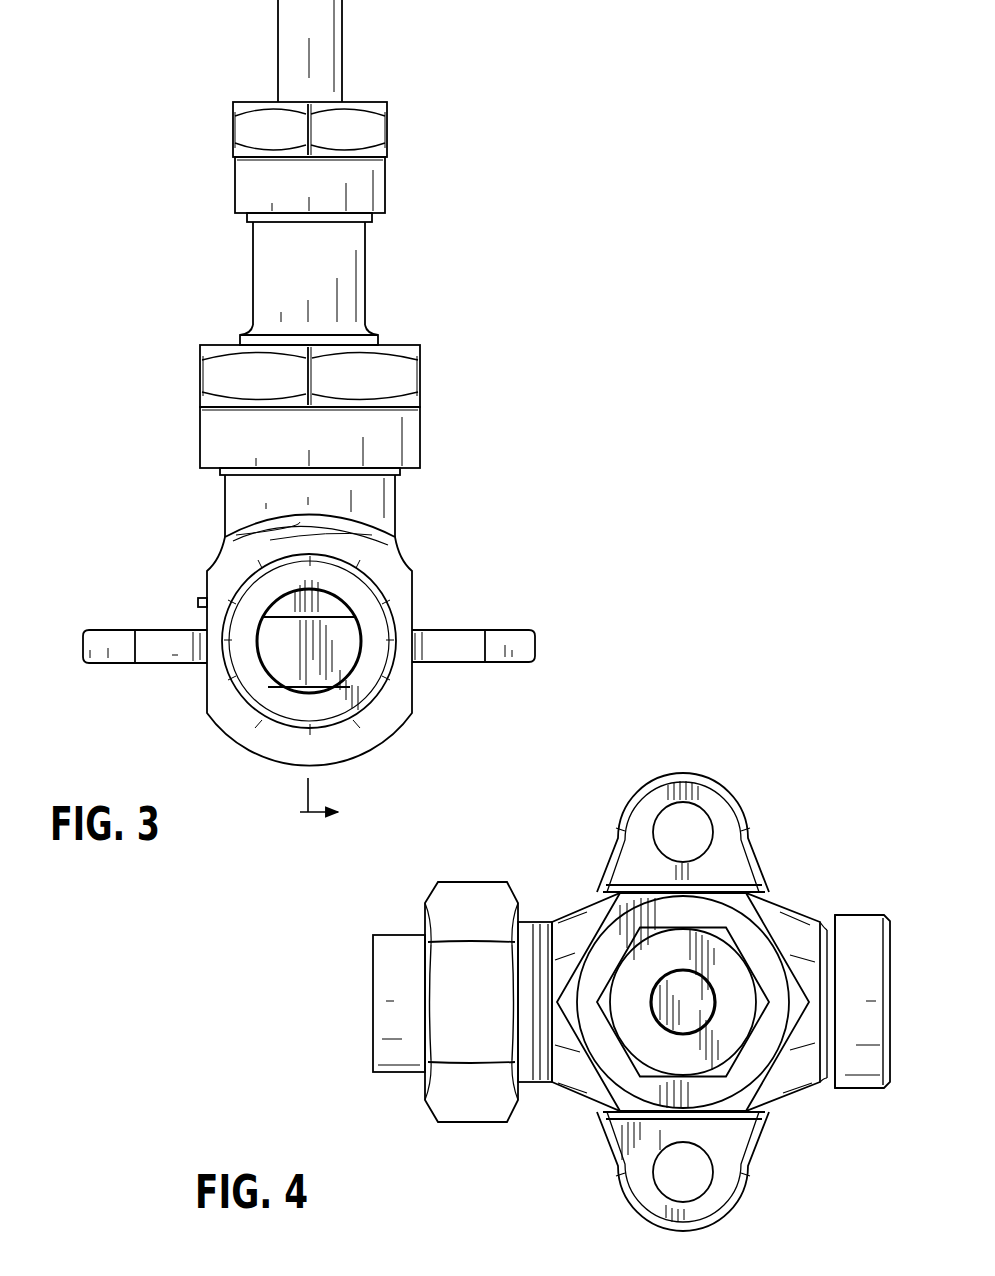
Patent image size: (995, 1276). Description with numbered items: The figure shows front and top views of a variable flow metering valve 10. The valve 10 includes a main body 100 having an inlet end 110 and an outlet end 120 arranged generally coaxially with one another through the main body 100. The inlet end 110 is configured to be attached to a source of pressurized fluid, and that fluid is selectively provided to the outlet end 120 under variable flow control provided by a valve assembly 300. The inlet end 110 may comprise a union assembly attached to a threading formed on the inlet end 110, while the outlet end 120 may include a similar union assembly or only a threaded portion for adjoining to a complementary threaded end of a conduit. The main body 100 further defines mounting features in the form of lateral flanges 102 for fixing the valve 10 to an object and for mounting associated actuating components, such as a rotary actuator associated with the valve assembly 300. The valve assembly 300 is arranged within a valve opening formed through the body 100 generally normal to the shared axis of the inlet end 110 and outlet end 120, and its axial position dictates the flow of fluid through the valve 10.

In FIG. 3, the variable flow metering valve 10 is at (434, 118).
In FIG. 4, the variable flow metering valve 10 is at (792, 794).
In FIG. 3, the valve assembly 300 is at (378, 321).
In FIG. 3, the main body 100 is at (385, 731).
In FIG. 4, the main body 100 is at (794, 919).
In FIG. 3, the lateral flanges 102 is at (113, 629).
In FIG. 4, the lateral flanges 102 is at (718, 801).
In FIG. 4, the inlet end 110 is at (357, 1013).
In FIG. 4, the outlet end 120 is at (904, 1057).